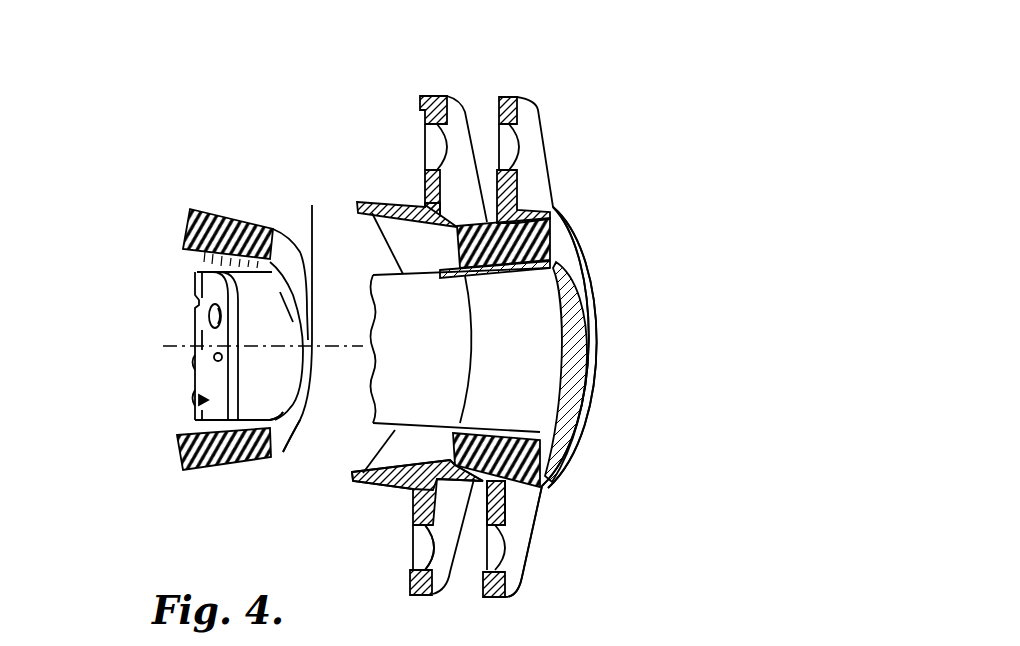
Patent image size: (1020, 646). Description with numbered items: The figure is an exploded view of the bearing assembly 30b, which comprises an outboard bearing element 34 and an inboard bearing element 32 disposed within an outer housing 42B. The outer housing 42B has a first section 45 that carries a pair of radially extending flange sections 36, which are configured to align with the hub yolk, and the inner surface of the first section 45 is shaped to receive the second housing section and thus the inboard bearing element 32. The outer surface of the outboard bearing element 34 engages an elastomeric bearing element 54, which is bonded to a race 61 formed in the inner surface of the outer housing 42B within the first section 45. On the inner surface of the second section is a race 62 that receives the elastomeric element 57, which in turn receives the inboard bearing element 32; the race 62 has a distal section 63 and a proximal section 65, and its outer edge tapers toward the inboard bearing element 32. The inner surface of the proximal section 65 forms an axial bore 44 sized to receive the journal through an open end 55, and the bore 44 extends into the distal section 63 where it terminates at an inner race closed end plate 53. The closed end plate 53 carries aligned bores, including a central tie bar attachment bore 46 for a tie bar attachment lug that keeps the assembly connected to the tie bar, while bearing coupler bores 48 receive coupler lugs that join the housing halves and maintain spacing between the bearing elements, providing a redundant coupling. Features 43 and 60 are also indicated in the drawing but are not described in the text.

The bearing assembly 30b is at (705, 97).
The inboard bearing element 32 is at (195, 271).
The outboard bearing element 34 is at (590, 305).
The flange sections 36 is at (440, 95).
The outer housing 42B is at (384, 495).
The bore end 43 is at (366, 427).
The axial bore 44 is at (508, 350).
The first section 45 is at (524, 588).
The tie bar attachment bore 46 is at (570, 460).
The bearing coupler bores 48 is at (278, 456).
The inner race closed end plate 53 is at (195, 376).
The elastomeric bearing element 54 is at (553, 250).
The open end 55 is at (601, 383).
The elastomeric element 57 is at (187, 228).
The groove 60 is at (428, 547).
The race 61 is at (550, 224).
The race 62 is at (267, 282).
The distal section 63 is at (198, 401).
The proximal section 65 is at (297, 314).